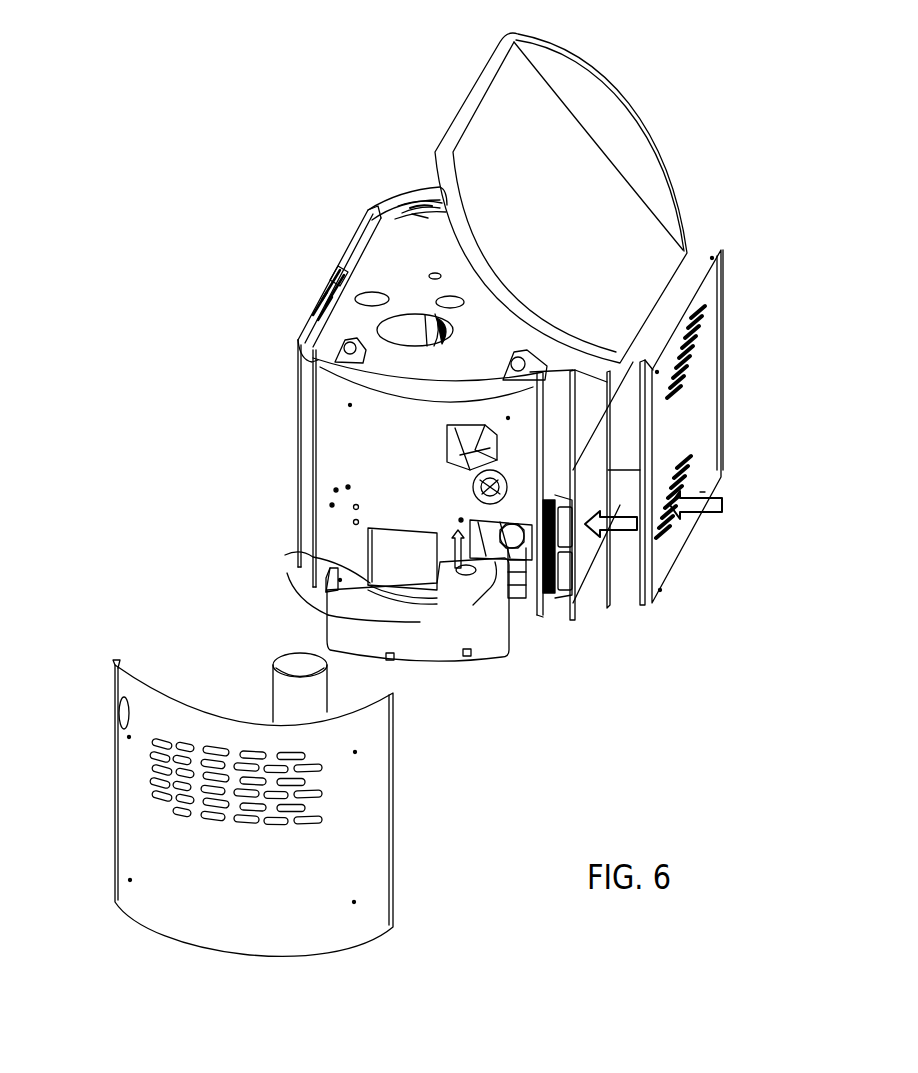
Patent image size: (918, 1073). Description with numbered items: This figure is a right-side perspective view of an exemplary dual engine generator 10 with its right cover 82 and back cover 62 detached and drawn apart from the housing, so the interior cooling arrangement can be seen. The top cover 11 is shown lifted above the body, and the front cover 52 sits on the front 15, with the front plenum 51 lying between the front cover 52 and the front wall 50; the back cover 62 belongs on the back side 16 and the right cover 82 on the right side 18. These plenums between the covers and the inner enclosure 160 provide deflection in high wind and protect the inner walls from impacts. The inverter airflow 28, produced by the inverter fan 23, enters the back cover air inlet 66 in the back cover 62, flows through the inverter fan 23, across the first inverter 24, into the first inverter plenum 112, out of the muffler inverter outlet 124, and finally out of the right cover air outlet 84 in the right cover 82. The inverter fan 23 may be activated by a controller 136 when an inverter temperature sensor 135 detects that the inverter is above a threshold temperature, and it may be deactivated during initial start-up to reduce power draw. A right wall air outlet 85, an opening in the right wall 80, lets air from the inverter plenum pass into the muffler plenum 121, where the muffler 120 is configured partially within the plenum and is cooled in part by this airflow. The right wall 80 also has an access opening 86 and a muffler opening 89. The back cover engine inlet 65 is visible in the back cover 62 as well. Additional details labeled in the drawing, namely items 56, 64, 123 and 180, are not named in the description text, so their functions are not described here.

The dual engine generator 10 is at (264, 129).
The top cover 11 is at (630, 155).
The front 15 is at (296, 380).
The back side 16 is at (692, 408).
The right side 18 is at (370, 783).
The inverter fan 23 is at (600, 572).
The first inverter 24 is at (580, 585).
The inverter airflow 28 is at (642, 598).
The front wall 50 is at (364, 236).
The front plenum 51 is at (352, 250).
The front cover 52 is at (325, 283).
The lower corner tab 56 is at (316, 338).
The back cover 62 is at (707, 290).
The lower vent slots 64 is at (696, 512).
The back cover engine inlet 65 is at (698, 345).
The back cover air inlet 66 is at (688, 480).
The right wall 80 is at (312, 470).
The right cover 82 is at (140, 840).
The right cover air outlet 84 is at (148, 778).
The right wall air outlet 85 is at (393, 548).
The access opening 86 is at (446, 440).
The muffler opening 89 is at (470, 484).
The first inverter plenum 112 is at (452, 538).
The muffler 120 is at (292, 668).
The muffler plenum 121 is at (478, 656).
The base clip 123 is at (337, 580).
The muffler inverter outlet 124 is at (566, 585).
The inverter temperature sensor 135 is at (512, 524).
The controller 136 is at (445, 296).
The inner enclosure 160 is at (404, 202).
The hinge slot 180 is at (418, 207).